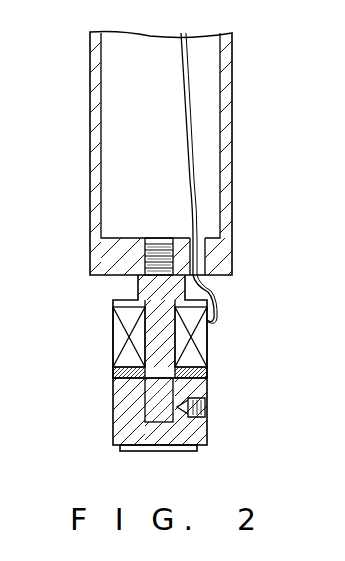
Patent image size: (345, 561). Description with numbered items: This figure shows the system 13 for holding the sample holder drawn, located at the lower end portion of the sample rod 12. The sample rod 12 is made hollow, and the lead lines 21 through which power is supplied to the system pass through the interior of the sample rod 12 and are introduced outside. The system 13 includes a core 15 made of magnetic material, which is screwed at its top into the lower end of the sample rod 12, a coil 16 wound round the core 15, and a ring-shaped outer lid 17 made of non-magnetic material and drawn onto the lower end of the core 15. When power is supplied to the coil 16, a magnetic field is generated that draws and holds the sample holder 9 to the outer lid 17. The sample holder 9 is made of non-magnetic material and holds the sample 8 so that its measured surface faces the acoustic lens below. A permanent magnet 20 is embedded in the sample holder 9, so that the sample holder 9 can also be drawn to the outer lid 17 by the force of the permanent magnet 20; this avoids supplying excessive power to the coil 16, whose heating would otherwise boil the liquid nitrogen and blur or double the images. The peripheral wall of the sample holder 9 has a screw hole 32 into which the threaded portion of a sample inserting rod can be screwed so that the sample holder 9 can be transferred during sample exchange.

The sample 8 is at (196, 451).
The sample holder 9 is at (200, 428).
The sample rod 12 is at (232, 100).
The system for holding sample holder drawn 13 is at (214, 333).
The core 15 is at (140, 283).
The coil 16 is at (118, 338).
The outer lid 17 is at (113, 378).
The permanent magnet 20 is at (146, 407).
The lead lines 21 is at (190, 180).
The screw hole 32 is at (207, 410).